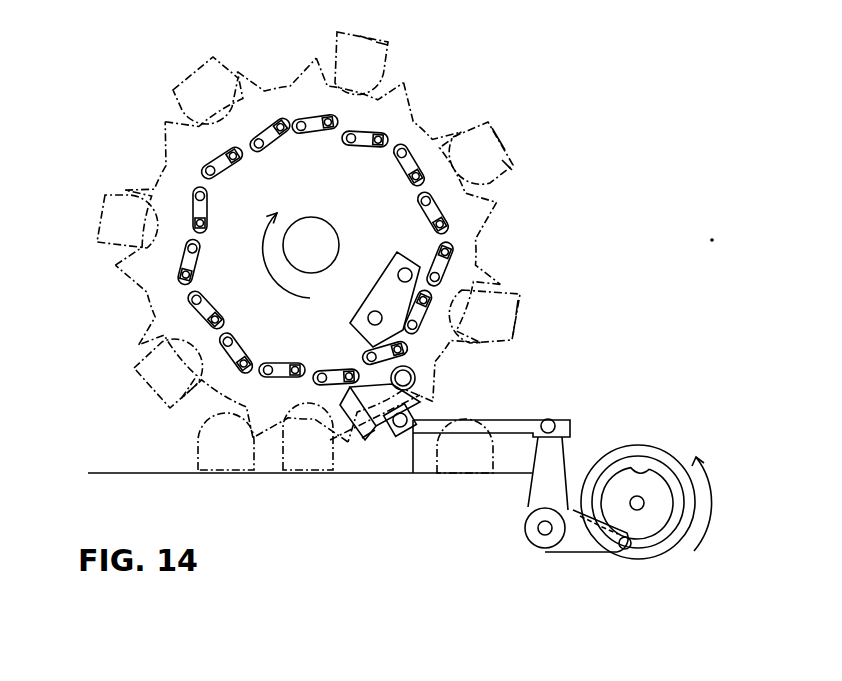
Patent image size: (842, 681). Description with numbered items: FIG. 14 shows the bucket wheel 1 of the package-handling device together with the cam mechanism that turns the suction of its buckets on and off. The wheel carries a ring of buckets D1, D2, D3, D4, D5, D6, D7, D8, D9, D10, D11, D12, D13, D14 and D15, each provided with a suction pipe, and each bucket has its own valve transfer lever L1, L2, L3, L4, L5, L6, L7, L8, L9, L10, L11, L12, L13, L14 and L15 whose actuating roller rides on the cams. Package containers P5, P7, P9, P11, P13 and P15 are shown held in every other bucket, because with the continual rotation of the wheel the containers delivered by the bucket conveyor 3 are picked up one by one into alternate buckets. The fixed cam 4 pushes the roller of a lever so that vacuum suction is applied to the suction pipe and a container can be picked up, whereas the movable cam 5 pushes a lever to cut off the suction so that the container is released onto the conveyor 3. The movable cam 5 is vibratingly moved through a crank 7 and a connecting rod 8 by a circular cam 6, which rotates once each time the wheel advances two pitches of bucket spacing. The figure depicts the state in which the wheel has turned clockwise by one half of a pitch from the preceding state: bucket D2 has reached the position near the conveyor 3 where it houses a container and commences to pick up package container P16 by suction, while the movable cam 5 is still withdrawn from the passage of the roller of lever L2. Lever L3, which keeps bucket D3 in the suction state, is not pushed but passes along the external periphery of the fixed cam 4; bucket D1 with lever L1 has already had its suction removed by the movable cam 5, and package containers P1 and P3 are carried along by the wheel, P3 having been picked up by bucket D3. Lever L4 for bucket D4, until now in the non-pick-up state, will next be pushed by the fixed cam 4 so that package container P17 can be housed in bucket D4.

The bucket wheel 1 is at (470, 220).
The bucket conveyor 3 is at (413, 473).
The fixed cam 4 is at (418, 340).
The movable cam 5 is at (368, 444).
The circular cam 6 is at (665, 556).
The crank 7 is at (578, 553).
The connecting rod 8 is at (512, 420).
The bucket D1 is at (228, 387).
The bucket D2 is at (282, 460).
The bucket D3 is at (335, 427).
The bucket D4 is at (443, 353).
The wheel recess 5 D5 is at (490, 292).
The wheel recess 6 D6 is at (482, 256).
The wheel recess 7 D7 is at (468, 187).
The wheel recess 8 D8 is at (407, 114).
The wheel recess 9 D9 is at (383, 77).
The wheel recess 10 D10 is at (271, 90).
The wheel recess 11 D11 is at (214, 124).
The wheel recess 12 D12 is at (176, 182).
The wheel recess 13 D13 is at (128, 242).
The wheel recess 14 D14 is at (165, 300).
The wheel recess 15 D15 is at (170, 353).
The valve transfer lever L1 is at (282, 365).
The valve transfer lever L2 is at (330, 370).
The valve transfer lever L3 is at (368, 360).
The valve transfer lever L4 is at (415, 330).
The movable lever L5 is at (455, 263).
The link 6 L6 is at (420, 215).
The link 7 L7 is at (400, 165).
The link 8 L8 is at (365, 152).
The link 9 L9 is at (312, 133).
The link 10 L10 is at (276, 150).
The link 11 L11 is at (226, 168).
The link 12 L12 is at (208, 213).
The link 13 L13 is at (200, 264).
The link 14 L14 is at (214, 302).
The link 15 L15 is at (250, 345).
The package container P1 is at (226, 441).
The package container P3 is at (362, 438).
The article 5 P5 is at (484, 316).
The article 7 P7 is at (481, 153).
The article 9 P9 is at (361, 63).
The article 11 P11 is at (205, 90).
The article 13 P13 is at (127, 221).
The article 15 P15 is at (168, 373).
The package container P16 is at (308, 436).
The package container P17 is at (465, 446).